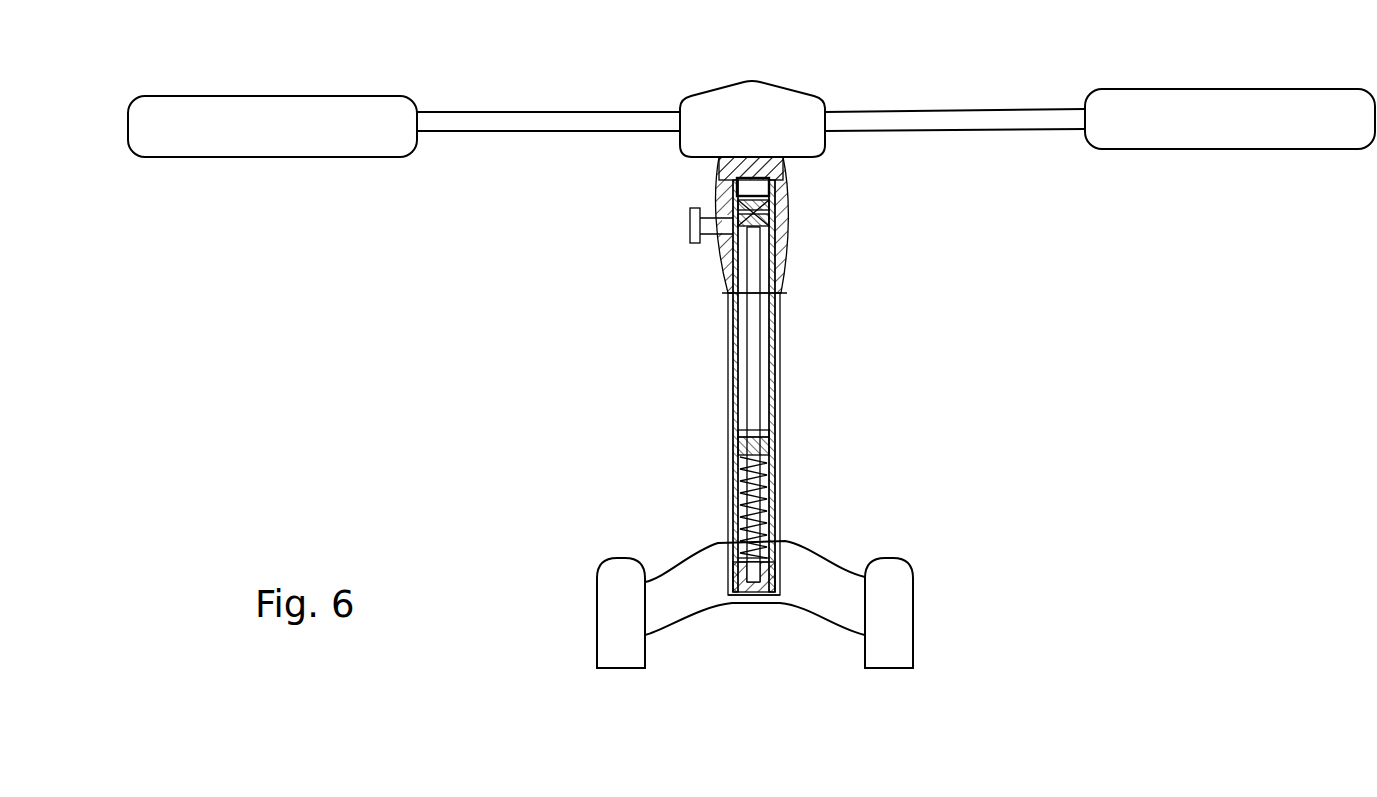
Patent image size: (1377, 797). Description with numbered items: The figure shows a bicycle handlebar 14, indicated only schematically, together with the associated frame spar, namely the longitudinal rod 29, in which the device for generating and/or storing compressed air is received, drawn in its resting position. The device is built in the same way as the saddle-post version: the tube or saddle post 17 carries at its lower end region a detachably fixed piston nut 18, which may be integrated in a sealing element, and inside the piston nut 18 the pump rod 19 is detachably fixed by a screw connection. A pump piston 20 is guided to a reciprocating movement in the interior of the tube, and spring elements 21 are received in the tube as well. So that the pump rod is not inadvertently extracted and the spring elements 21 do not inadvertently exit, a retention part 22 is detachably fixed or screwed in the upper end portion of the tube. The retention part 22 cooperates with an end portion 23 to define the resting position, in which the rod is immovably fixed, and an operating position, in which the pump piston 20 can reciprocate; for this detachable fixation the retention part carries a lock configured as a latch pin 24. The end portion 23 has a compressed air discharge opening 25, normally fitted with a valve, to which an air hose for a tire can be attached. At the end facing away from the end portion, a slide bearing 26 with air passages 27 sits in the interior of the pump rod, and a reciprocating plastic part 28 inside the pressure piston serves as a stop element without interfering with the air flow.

The handlebar 14 is at (982, 118).
The saddle post 17 is at (695, 403).
The piston nut 18 is at (742, 592).
The pump rod 19 is at (779, 527).
The pump piston 20 is at (728, 328).
The spring elements 21 is at (733, 523).
The retention part 22 is at (783, 256).
The end portion 23 is at (720, 167).
The latch pin 24 is at (697, 242).
The compressed air discharge opening 25 is at (780, 190).
The slide bearing 26 is at (733, 442).
The air passages 27 is at (777, 447).
The plastic part 28 is at (776, 218).
The longitudinal rod 29 is at (779, 367).